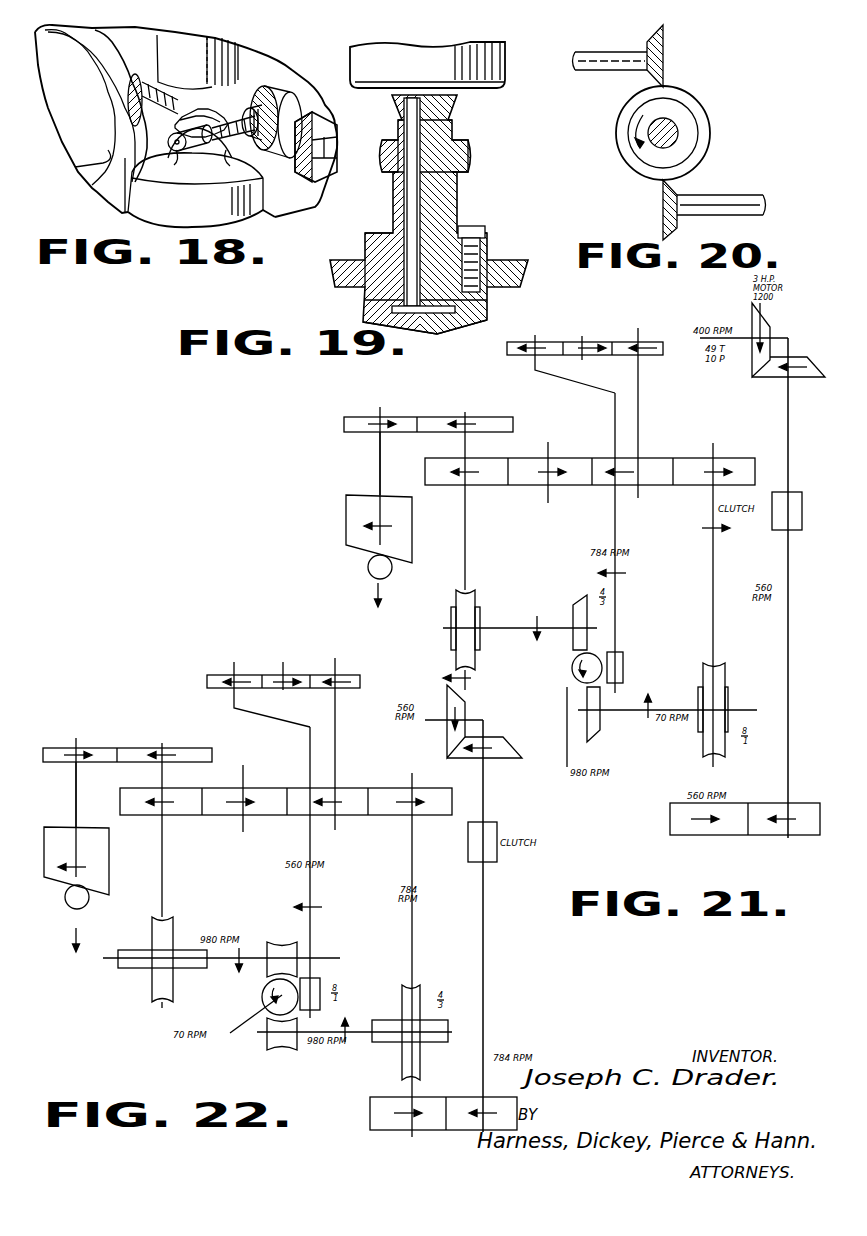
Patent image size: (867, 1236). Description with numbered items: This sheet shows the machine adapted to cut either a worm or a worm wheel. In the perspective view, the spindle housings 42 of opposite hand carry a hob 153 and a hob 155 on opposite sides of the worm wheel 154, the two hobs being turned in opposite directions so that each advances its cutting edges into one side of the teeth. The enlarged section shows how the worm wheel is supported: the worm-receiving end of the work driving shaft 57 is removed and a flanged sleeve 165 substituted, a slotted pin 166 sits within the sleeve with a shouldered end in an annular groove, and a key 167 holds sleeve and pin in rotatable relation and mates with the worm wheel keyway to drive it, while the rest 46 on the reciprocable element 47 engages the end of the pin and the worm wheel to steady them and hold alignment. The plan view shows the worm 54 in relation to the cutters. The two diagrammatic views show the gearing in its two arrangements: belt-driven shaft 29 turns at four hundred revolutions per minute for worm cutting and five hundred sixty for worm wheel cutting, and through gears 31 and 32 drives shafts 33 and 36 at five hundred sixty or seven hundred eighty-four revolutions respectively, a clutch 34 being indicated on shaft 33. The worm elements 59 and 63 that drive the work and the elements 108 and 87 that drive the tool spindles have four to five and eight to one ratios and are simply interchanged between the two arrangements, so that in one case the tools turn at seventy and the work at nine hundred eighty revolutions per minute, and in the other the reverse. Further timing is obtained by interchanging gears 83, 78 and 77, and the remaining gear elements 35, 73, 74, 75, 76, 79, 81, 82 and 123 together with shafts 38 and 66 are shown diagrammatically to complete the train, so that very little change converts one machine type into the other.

In FIG. 18, the spindle housing 42 is at (92, 192).
In FIG. 18, the hob 153 is at (146, 82).
In FIG. 18, the worm wheel 154 is at (250, 63).
In FIG. 19, the worm wheel 154 is at (470, 143).
In FIG. 18, the hob 155 is at (258, 192).
In FIG. 19, the reciprocable element 47 is at (508, 50).
In FIG. 19, the rest 46 is at (500, 88).
In FIG. 19, the flanged sleeve 165 is at (460, 196).
In FIG. 19, the slotted pin 166 is at (470, 229).
In FIG. 19, the key 167 is at (405, 212).
In FIG. 19, the work driving shaft 57 is at (490, 310).
In FIG. 20, the worm 54 is at (702, 121).
In FIG. 21, the shaft 29 is at (700, 338).
In FIG. 22, the shaft 29 is at (428, 722).
In FIG. 21, the gear 31 is at (771, 327).
In FIG. 22, the gear 31 is at (466, 700).
In FIG. 21, the gear 32 is at (815, 372).
In FIG. 22, the gear 32 is at (503, 745).
In FIG. 21, the shaft 33 is at (789, 444).
In FIG. 22, the shaft 33 is at (485, 805).
In FIG. 21, the clutch 34 is at (801, 493).
In FIG. 22, the clutch 34 is at (498, 832).
In FIG. 21, the gear pair 35 is at (765, 830).
In FIG. 22, the gear pair 35 is at (455, 1130).
In FIG. 21, the shaft 36 is at (714, 556).
In FIG. 22, the shaft 36 is at (414, 937).
In FIG. 21, the pulley shaft 38 is at (467, 551).
In FIG. 22, the pulley shaft 38 is at (165, 876).
In FIG. 21, the worm element 59 is at (598, 652).
In FIG. 22, the worm element 59 is at (420, 992).
In FIG. 21, the worm element 63 is at (624, 656).
In FIG. 22, the worm element 63 is at (440, 1030).
In FIG. 21, the shaft 66 is at (616, 518).
In FIG. 22, the shaft 66 is at (311, 843).
In FIG. 21, the gear 73 is at (747, 458).
In FIG. 22, the gear 73 is at (444, 778).
In FIG. 21, the gear 74 is at (668, 448).
In FIG. 22, the gear 74 is at (340, 788).
In FIG. 21, the gear 75 is at (556, 455).
In FIG. 22, the gear 75 is at (252, 788).
In FIG. 21, the gear 76 is at (477, 458).
In FIG. 22, the gear 76 is at (175, 790).
In FIG. 21, the gear 77 is at (583, 340).
In FIG. 22, the gear 77 is at (284, 668).
In FIG. 21, the gear 78 is at (537, 342).
In FIG. 22, the gear 78 is at (238, 672).
In FIG. 21, the gear 79 is at (482, 412).
In FIG. 22, the gear 79 is at (175, 755).
In FIG. 21, the gear 81 is at (386, 410).
In FIG. 22, the gear 81 is at (110, 752).
In FIG. 21, the shaft 82 is at (381, 459).
In FIG. 22, the shaft 82 is at (79, 784).
In FIG. 21, the gear 83 is at (656, 345).
In FIG. 22, the gear 83 is at (340, 672).
In FIG. 21, the element for driving the tool spindles 87 is at (727, 703).
In FIG. 22, the element for driving the tool spindles 87 is at (321, 985).
In FIG. 21, the element for driving the tool spindles 108 is at (716, 676).
In FIG. 22, the element for driving the tool spindles 108 is at (300, 975).
In FIG. 21, the bevel gear 123 is at (412, 555).
In FIG. 22, the bevel gear 123 is at (111, 883).